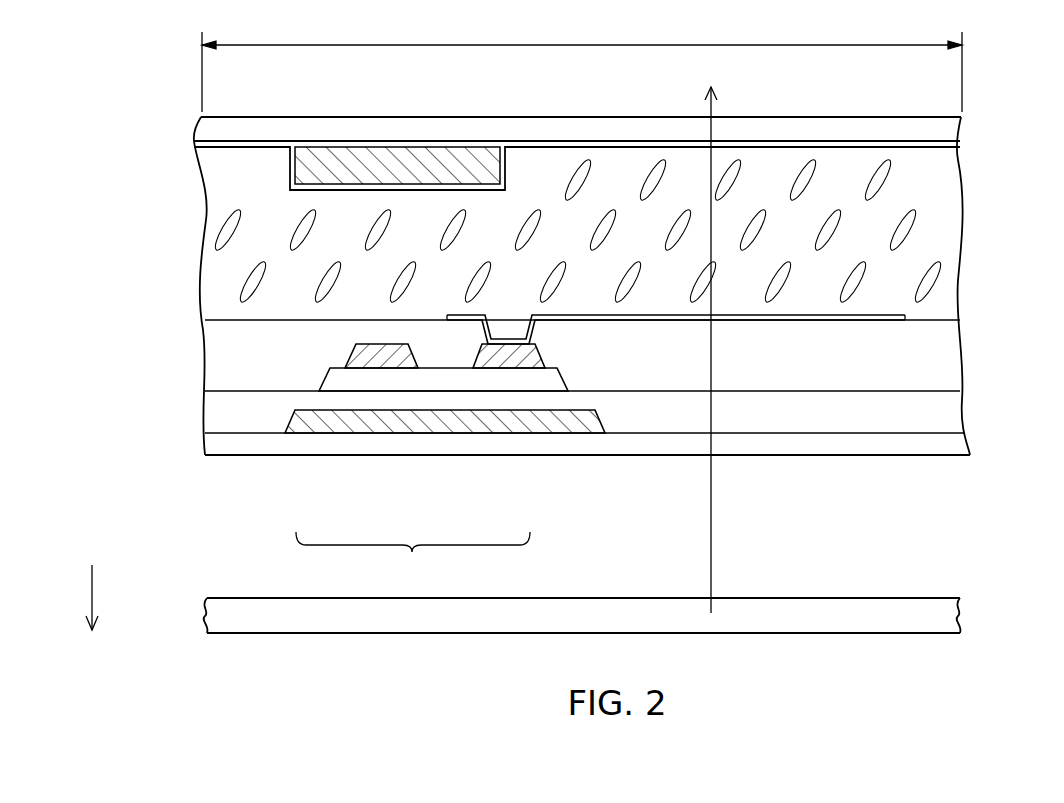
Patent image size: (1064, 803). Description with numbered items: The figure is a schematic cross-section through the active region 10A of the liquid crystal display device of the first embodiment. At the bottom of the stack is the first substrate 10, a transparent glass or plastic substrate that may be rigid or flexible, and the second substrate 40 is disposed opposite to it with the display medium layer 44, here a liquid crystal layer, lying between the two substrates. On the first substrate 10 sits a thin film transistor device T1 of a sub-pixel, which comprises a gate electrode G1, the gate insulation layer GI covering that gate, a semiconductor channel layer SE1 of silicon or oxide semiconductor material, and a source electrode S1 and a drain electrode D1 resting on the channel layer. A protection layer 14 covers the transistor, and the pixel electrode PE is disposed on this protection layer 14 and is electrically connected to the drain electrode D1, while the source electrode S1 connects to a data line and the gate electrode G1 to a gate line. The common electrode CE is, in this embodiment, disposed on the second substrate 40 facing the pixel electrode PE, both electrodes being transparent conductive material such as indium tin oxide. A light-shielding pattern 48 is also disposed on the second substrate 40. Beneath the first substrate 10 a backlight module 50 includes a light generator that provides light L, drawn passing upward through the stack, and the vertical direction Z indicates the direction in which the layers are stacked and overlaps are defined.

The active region 10A is at (582, 67).
The second substrate 40 is at (933, 128).
The common electrode CE is at (918, 148).
The light-shielding pattern 48 is at (411, 150).
The display medium layer 44 is at (950, 236).
The pixel electrode PE is at (890, 323).
The protection layer 14 is at (788, 369).
The gate insulation layer GI is at (788, 427).
The first substrate 10 is at (938, 445).
The gate electrode G1 is at (323, 423).
The source electrode S1 is at (376, 358).
The semiconductor channel layer SE1 is at (445, 377).
The drain electrode D1 is at (510, 360).
The thin film transistor device T1 is at (413, 554).
The light L is at (712, 535).
The backlight module 50 is at (937, 615).
The vertical direction Z is at (92, 583).